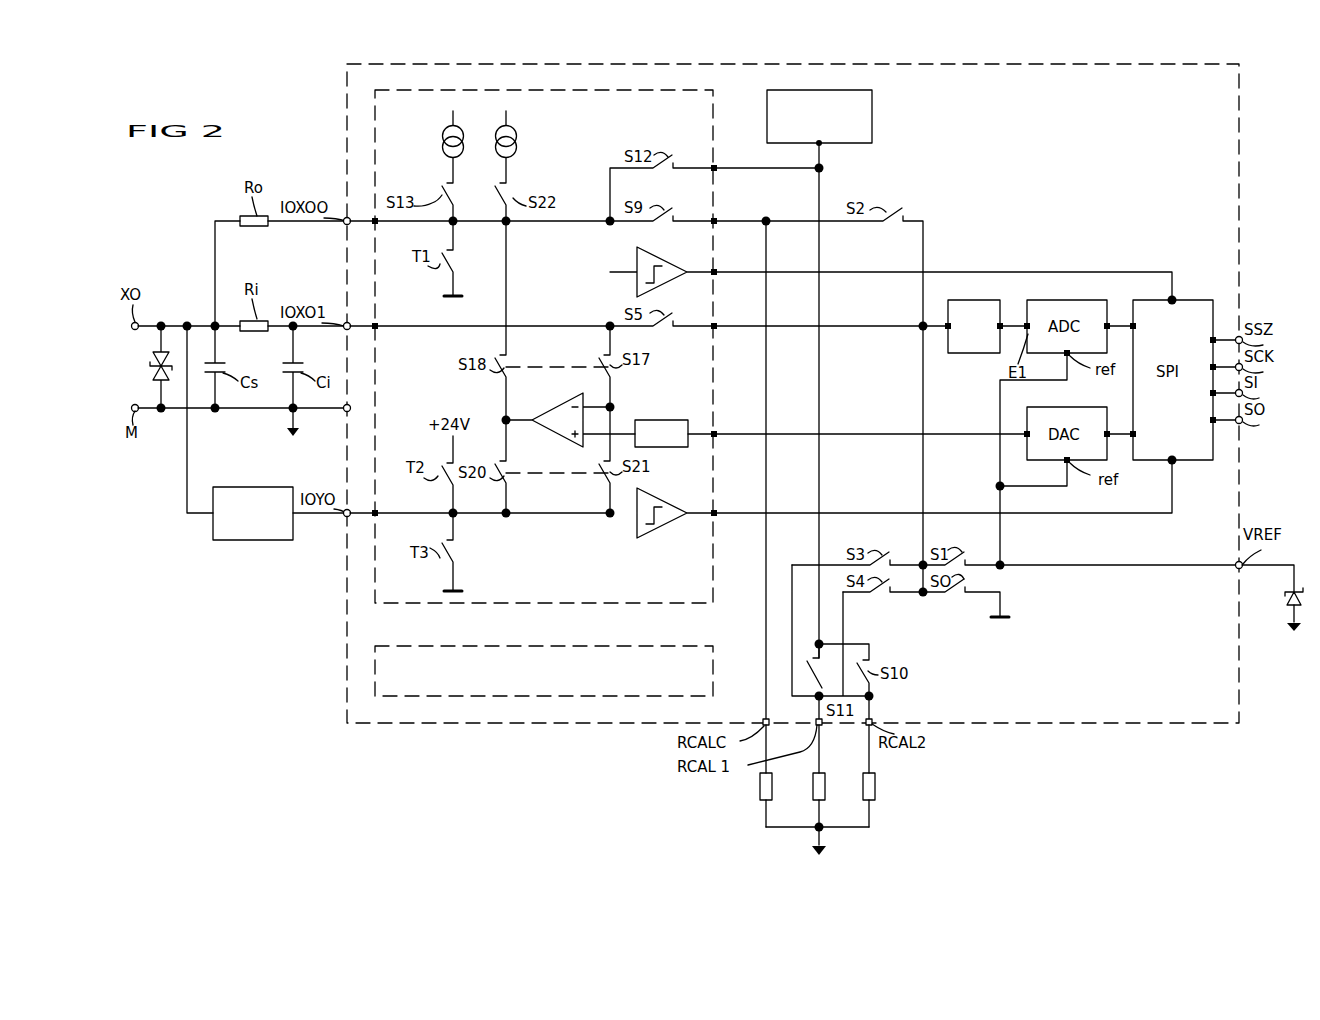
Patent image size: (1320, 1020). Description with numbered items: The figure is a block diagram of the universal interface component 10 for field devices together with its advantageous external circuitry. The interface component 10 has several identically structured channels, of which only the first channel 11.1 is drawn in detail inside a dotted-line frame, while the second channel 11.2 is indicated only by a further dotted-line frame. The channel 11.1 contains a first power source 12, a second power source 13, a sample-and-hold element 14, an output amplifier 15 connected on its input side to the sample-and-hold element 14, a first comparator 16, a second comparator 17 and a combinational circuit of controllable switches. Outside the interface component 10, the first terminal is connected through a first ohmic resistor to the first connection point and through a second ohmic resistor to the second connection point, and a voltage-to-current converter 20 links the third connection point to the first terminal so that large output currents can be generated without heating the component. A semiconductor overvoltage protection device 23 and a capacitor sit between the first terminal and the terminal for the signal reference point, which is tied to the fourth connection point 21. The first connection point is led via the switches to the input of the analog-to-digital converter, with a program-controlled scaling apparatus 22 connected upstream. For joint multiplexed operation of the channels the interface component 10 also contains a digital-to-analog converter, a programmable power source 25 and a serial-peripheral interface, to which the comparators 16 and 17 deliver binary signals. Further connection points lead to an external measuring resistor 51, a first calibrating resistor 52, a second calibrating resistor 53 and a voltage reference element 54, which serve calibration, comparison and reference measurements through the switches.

The interface component 10 is at (1240, 175).
The first channel 11.1 is at (706, 598).
The second channel 11.2 is at (706, 692).
The first power source 12 is at (439, 137).
The second power source 13 is at (517, 138).
The sample-and-hold element 14 is at (673, 420).
The output amplifier 15 is at (558, 396).
The first comparator 16 is at (666, 528).
The second comparator 17 is at (664, 290).
The voltage-to-current converter 20 is at (230, 540).
The fourth connection point 21 is at (344, 412).
The scaling apparatus 22 is at (986, 335).
The semiconductor overvoltage protection device 23 is at (151, 370).
The programmable power source 25 is at (872, 115).
The measuring resistor 51 is at (760, 788).
The first calibrating resistor 52 is at (811, 788).
The second calibrating resistor 53 is at (875, 790).
The voltage reference element 54 is at (1286, 600).